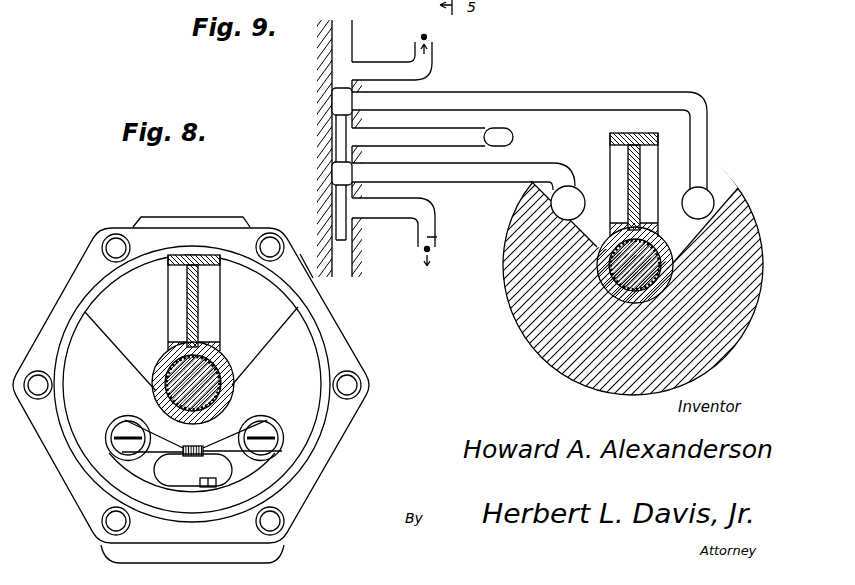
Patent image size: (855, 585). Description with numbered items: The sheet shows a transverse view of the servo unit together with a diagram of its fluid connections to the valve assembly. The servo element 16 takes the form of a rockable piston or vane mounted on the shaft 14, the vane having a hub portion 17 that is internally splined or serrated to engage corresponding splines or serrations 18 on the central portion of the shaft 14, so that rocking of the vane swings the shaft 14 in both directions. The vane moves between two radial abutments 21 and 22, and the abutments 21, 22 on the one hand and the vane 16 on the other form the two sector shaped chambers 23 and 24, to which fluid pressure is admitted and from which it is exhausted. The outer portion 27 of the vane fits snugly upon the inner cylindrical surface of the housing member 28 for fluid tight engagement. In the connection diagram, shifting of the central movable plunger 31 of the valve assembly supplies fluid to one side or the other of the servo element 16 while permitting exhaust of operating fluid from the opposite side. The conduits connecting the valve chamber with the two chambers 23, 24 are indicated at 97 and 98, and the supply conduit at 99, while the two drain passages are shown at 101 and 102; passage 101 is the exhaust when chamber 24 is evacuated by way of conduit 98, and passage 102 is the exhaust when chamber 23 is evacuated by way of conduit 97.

In FIG. 9, the shaft 14 is at (635, 265).
In FIG. 8, the shaft 14 is at (166, 392).
In FIG. 9, the servo element 16 is at (634, 207).
In FIG. 8, the servo element 16 is at (196, 328).
In FIG. 9, the hub portion 17 is at (635, 218).
In FIG. 8, the hub portion 17 is at (176, 360).
In FIG. 9, the splines or serrations 18 is at (635, 265).
In FIG. 8, the splines or serrations 18 is at (222, 381).
In FIG. 9, the radial abutment 21 is at (532, 242).
In FIG. 8, the radial abutment 21 is at (127, 353).
In FIG. 9, the radial abutment 22 is at (722, 219).
In FIG. 8, the radial abutment 22 is at (252, 366).
In FIG. 9, the sector shaped chamber 23 is at (543, 199).
In FIG. 8, the sector shaped chamber 23 is at (110, 293).
In FIG. 9, the sector shaped chamber 24 is at (720, 200).
In FIG. 8, the sector shaped chamber 24 is at (274, 308).
In FIG. 8, the outer portion of the vane 27 is at (189, 262).
In FIG. 8, the housing member 28 is at (322, 353).
In FIG. 9, the plunger 31 is at (342, 266).
In FIG. 9, the conduit 97 is at (500, 171).
In FIG. 9, the conduit 98 is at (557, 103).
In FIG. 9, the supply conduit 99 is at (435, 137).
In FIG. 9, the exhaust passage 101 is at (382, 66).
In FIG. 9, the exhaust passage 102 is at (406, 208).